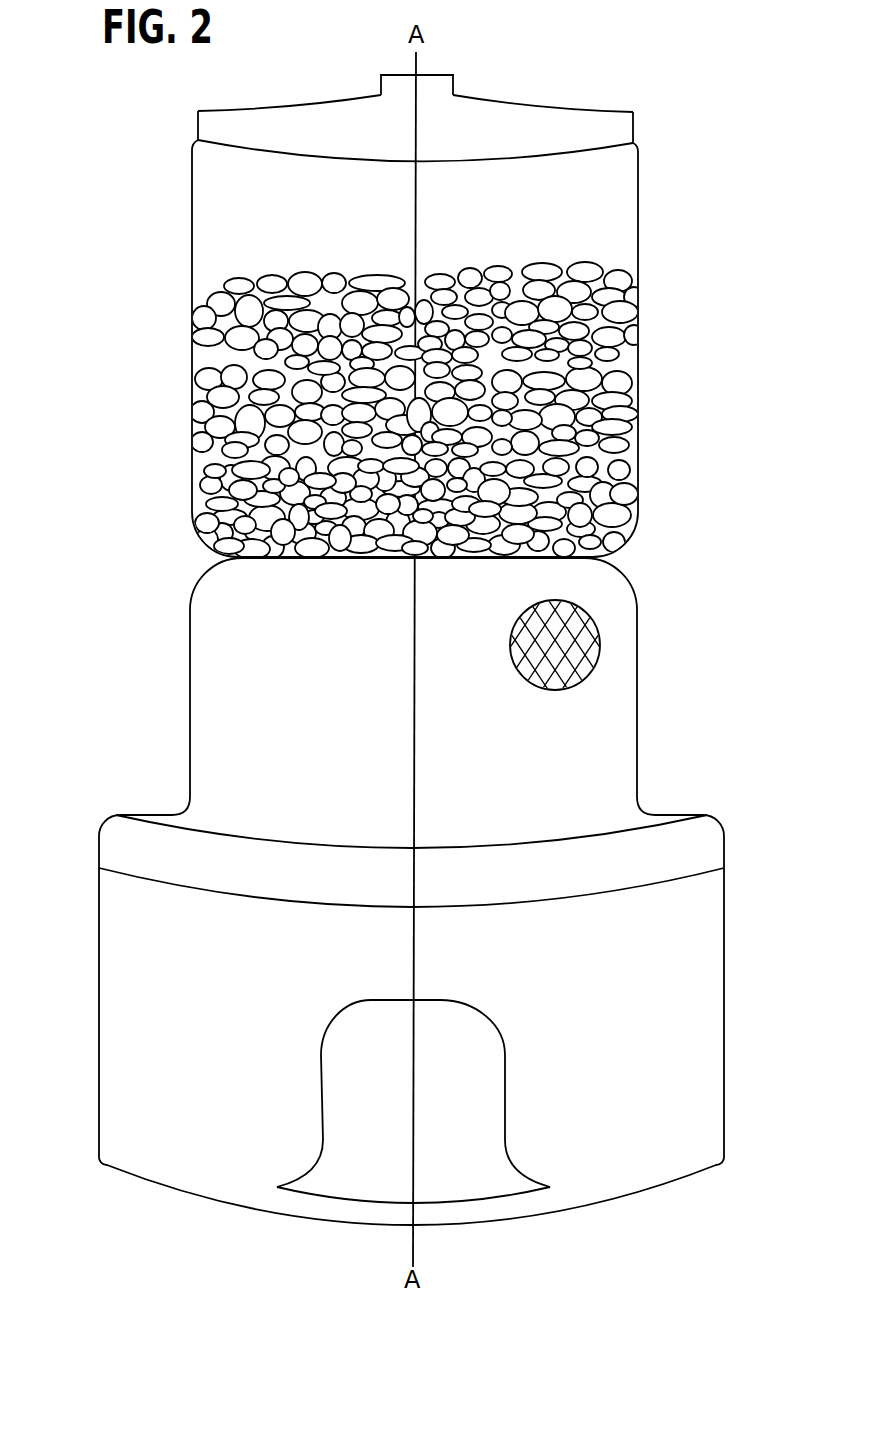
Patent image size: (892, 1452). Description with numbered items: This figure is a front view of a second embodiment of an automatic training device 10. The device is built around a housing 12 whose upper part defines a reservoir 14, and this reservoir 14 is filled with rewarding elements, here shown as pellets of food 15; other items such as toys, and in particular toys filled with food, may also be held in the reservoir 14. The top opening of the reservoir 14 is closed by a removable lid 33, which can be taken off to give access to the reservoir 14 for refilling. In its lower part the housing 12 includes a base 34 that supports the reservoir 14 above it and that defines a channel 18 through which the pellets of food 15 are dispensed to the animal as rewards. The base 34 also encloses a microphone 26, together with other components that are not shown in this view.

The automatic training device 10 is at (130, 1210).
The housing 12 is at (205, 410).
The reservoir 14 is at (278, 232).
The pellets of food 15 is at (197, 494).
The channel 18 is at (465, 1180).
The microphone 26 is at (600, 618).
The removable lid 33 is at (610, 132).
The base 34 is at (210, 696).